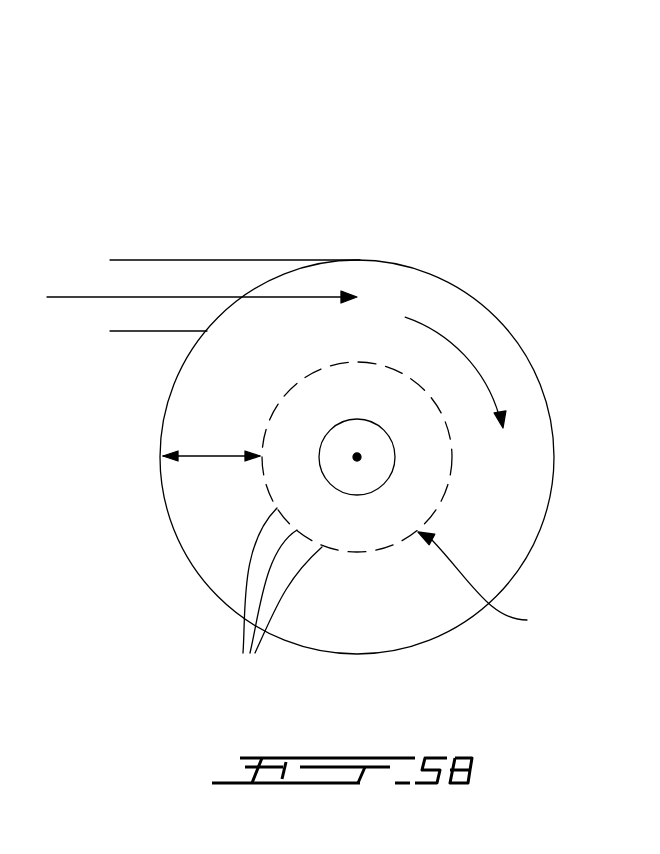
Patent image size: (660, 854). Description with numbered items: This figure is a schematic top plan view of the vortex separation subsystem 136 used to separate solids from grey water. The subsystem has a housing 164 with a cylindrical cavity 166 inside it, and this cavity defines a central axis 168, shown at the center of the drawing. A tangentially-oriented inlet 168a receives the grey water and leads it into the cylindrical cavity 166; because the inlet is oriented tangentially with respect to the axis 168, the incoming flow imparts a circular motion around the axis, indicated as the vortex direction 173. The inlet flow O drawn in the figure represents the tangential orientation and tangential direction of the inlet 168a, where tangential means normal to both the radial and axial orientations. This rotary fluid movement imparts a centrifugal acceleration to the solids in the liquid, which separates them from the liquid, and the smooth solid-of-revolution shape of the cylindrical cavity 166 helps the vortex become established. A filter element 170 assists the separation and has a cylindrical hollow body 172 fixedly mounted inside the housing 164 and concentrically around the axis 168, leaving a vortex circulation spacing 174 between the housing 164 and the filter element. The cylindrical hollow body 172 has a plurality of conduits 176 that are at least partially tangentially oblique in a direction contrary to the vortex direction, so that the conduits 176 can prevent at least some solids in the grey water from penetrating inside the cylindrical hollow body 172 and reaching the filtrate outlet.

The vortex separation subsystem 136 is at (215, 193).
The housing 164 is at (523, 348).
The cylindrical cavity 166 is at (530, 422).
The axis 168 is at (357, 457).
The tangentially-oriented inlet 168a is at (295, 280).
The inlet flow O is at (77, 297).
The filter element 170 is at (494, 584).
The cylindrical hollow body 172 is at (453, 472).
The vortex direction 173 is at (457, 345).
The vortex circulation spacing 174 is at (210, 457).
The conduits 176 is at (274, 598).